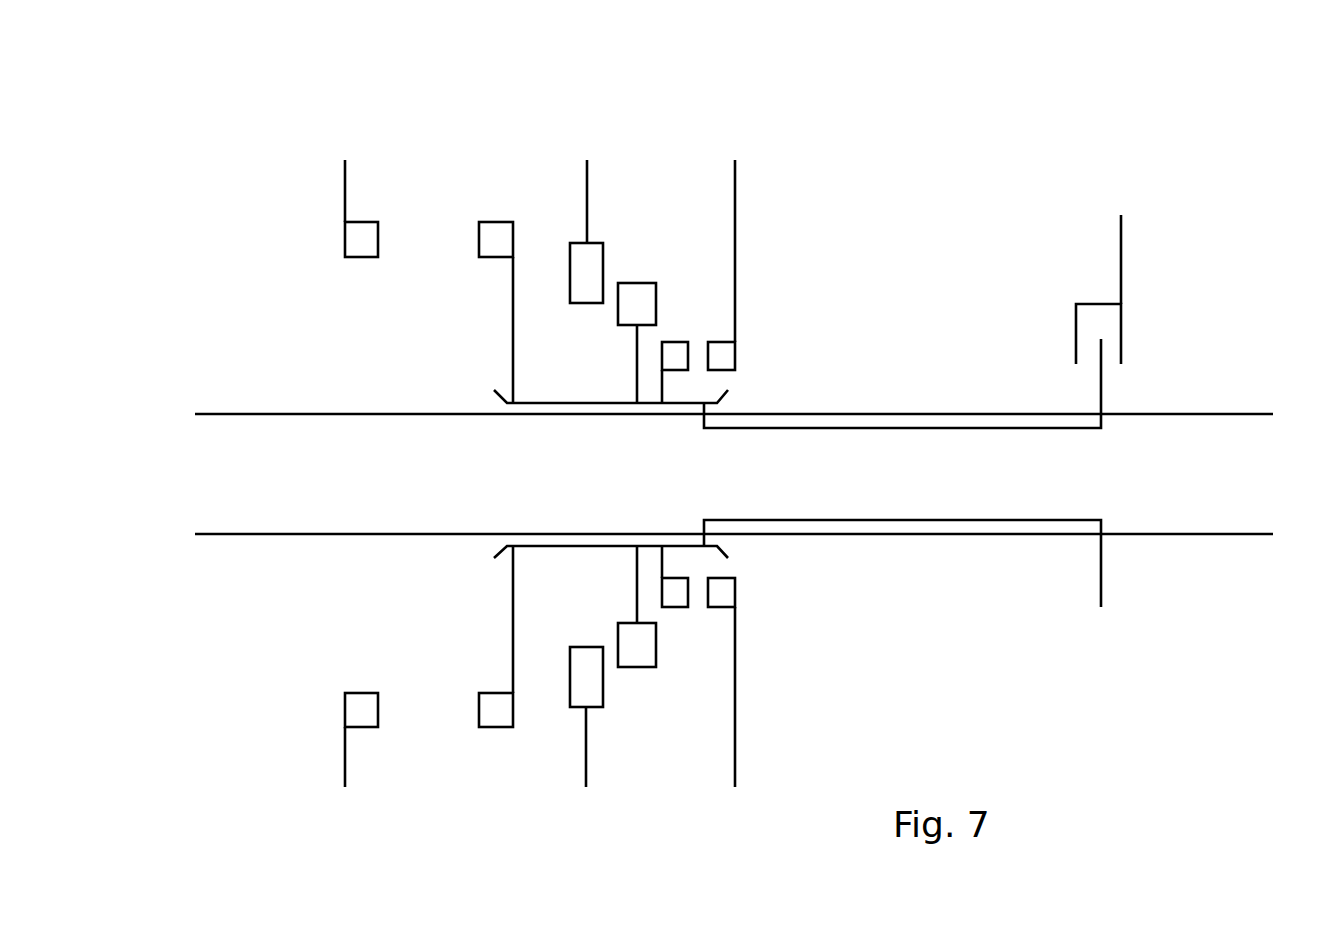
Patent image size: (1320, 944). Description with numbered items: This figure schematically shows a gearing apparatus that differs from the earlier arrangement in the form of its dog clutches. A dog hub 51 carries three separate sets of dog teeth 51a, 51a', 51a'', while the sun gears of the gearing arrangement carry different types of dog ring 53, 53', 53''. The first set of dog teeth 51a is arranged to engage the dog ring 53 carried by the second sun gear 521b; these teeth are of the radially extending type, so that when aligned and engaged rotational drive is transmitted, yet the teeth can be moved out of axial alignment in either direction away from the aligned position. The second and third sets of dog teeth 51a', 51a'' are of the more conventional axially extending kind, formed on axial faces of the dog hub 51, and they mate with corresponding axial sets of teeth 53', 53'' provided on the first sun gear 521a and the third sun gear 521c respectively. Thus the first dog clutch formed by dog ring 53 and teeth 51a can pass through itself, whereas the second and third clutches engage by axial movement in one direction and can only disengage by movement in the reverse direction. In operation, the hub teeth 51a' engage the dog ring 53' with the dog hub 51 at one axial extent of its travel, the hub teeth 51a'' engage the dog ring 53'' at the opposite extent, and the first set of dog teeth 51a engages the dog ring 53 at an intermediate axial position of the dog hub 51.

The dog hub 51 is at (527, 545).
The first set of dog teeth 51a is at (758, 299).
The second set of dog teeth 51a' is at (779, 334).
The third set of dog teeth 51a'' is at (529, 227).
The dog ring 53 is at (650, 204).
The dog ring 53' is at (805, 355).
The dog ring 53'' is at (295, 258).
The first sun gear 521a is at (737, 206).
The second sun gear 521b is at (588, 185).
The third sun gear 521c is at (348, 184).